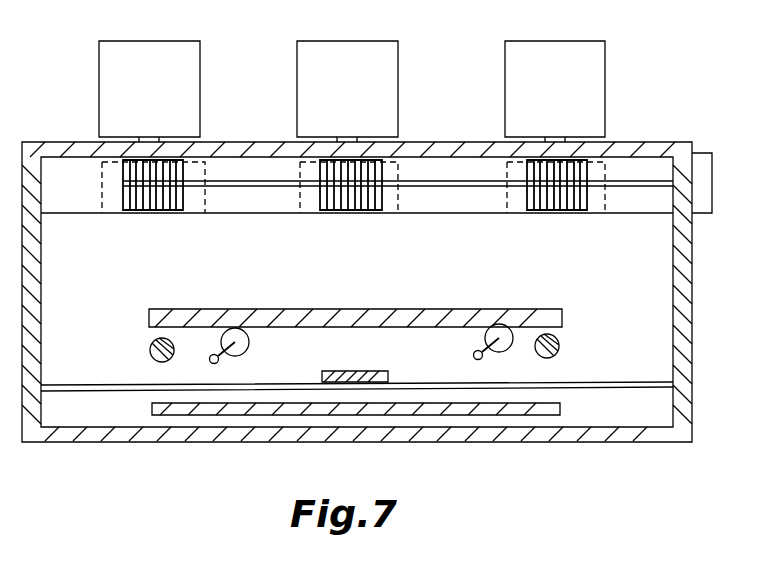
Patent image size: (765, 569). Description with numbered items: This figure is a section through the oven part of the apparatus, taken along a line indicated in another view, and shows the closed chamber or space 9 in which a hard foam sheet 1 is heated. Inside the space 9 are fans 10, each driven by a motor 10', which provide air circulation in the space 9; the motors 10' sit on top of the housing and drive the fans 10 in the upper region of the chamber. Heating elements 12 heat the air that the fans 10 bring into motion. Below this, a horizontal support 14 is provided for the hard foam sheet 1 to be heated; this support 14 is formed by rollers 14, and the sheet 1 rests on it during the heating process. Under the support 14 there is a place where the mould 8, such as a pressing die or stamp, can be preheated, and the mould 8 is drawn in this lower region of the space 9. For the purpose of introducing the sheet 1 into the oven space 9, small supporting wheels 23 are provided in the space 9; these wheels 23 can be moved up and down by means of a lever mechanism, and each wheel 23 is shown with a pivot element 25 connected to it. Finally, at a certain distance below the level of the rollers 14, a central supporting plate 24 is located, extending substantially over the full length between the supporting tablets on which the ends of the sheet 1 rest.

The hard foam sheet 1 is at (307, 312).
The mould 8 is at (293, 408).
The closed chamber or space 9 is at (617, 271).
The fan 10 is at (355, 206).
The motor 10' is at (352, 91).
The heating element 12 is at (432, 187).
The horizontal support 14 is at (149, 347).
The small supporting wheel 23 is at (249, 351).
The central supporting plate 24 is at (334, 371).
The pin 25 is at (210, 355).